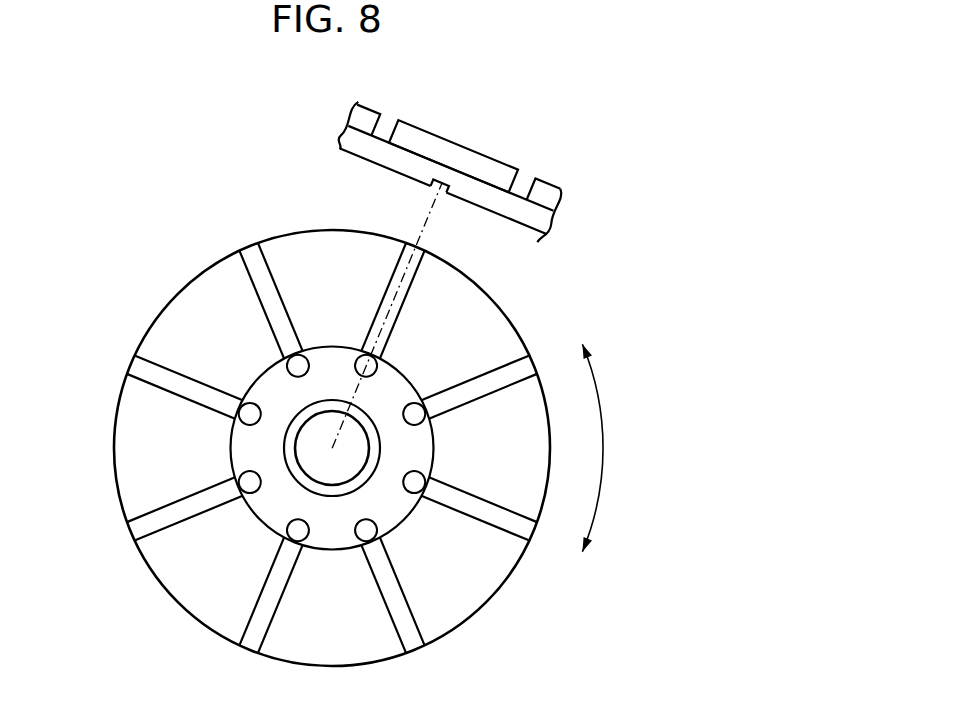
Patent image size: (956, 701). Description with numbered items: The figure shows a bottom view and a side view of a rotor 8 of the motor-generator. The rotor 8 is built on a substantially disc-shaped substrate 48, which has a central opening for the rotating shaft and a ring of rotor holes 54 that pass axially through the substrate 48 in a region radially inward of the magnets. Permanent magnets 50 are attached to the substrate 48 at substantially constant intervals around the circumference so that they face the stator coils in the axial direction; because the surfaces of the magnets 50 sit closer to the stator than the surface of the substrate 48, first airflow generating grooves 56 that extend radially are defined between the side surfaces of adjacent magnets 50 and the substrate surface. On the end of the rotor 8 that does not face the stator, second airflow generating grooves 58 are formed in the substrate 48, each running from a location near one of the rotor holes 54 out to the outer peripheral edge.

The rotor 8 is at (137, 305).
The substrate 48 is at (197, 277).
The permanent magnets 50 is at (445, 145).
The rotor holes 54 is at (245, 484).
The first airflow generating grooves 56 is at (393, 122).
The second airflow generating grooves 58 is at (443, 187).